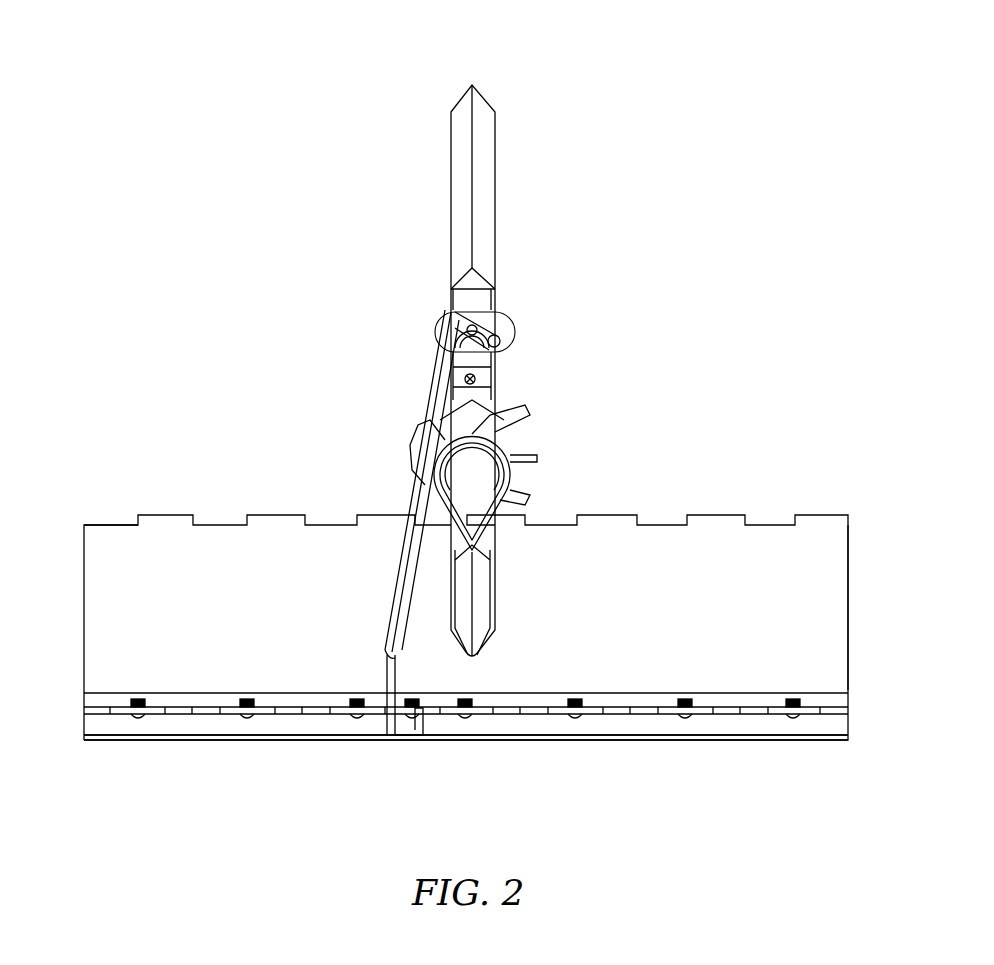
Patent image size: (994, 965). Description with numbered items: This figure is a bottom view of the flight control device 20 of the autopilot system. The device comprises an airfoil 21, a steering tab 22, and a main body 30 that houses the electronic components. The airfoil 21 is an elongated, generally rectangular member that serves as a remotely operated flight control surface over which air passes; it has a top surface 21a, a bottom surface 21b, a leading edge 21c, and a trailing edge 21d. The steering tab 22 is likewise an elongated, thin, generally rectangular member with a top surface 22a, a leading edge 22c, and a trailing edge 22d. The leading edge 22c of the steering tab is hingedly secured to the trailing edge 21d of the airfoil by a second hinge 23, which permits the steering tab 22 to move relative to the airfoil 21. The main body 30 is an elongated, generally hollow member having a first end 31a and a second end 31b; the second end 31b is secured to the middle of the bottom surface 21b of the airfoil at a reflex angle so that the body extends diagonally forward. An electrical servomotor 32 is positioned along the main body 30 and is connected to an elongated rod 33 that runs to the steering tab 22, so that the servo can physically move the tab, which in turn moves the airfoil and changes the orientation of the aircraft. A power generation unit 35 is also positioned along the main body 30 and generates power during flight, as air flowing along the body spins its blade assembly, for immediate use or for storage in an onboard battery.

The flight control device 20 is at (252, 85).
The airfoil 21 is at (74, 618).
The top surface 21a is at (862, 592).
The bottom surface 21b is at (705, 601).
The leading edge 21c is at (110, 520).
The trailing edge 21d is at (728, 700).
The steering tab 22 is at (862, 710).
The top surface 22a is at (525, 724).
The leading edge 22c is at (638, 717).
The trailing edge 22d is at (182, 745).
The second hinge 23 is at (607, 703).
The main body 30 is at (435, 207).
The first end 31a is at (482, 98).
The second end 31b is at (497, 598).
The servomotor 32 is at (497, 318).
The elongated rod 33 is at (403, 553).
The power generation unit 35 is at (552, 445).